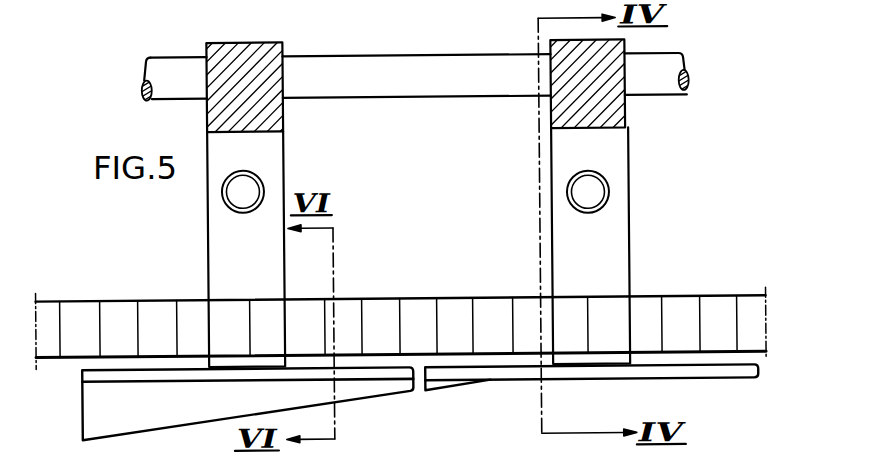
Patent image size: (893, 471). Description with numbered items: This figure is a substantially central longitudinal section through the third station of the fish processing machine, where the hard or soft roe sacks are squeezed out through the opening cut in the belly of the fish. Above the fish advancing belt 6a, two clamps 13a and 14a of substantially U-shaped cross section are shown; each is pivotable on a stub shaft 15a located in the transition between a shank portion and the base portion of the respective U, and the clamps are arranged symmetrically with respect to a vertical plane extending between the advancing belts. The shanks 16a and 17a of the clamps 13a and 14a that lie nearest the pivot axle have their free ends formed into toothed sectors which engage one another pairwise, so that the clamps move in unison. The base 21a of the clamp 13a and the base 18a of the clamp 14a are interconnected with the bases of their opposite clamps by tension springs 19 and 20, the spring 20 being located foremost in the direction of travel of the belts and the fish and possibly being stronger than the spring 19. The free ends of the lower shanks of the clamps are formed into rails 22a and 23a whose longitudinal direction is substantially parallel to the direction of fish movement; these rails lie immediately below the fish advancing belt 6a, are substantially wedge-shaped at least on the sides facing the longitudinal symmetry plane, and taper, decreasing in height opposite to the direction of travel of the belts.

The fish advancing belt 6a is at (457, 298).
The clamp 13a is at (630, 182).
The clamp 14a is at (285, 150).
The stub shaft 15a is at (421, 68).
The shank 16a is at (606, 111).
The shank 17a is at (257, 69).
The base 18a is at (225, 275).
The tension spring 19 is at (609, 206).
The tension spring 20 is at (226, 197).
The base 21a is at (612, 234).
The rail 22a is at (457, 384).
The rail 23a is at (160, 421).